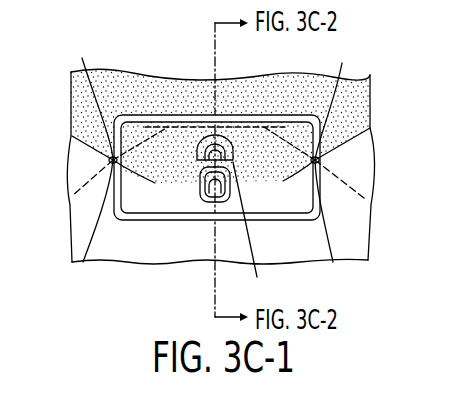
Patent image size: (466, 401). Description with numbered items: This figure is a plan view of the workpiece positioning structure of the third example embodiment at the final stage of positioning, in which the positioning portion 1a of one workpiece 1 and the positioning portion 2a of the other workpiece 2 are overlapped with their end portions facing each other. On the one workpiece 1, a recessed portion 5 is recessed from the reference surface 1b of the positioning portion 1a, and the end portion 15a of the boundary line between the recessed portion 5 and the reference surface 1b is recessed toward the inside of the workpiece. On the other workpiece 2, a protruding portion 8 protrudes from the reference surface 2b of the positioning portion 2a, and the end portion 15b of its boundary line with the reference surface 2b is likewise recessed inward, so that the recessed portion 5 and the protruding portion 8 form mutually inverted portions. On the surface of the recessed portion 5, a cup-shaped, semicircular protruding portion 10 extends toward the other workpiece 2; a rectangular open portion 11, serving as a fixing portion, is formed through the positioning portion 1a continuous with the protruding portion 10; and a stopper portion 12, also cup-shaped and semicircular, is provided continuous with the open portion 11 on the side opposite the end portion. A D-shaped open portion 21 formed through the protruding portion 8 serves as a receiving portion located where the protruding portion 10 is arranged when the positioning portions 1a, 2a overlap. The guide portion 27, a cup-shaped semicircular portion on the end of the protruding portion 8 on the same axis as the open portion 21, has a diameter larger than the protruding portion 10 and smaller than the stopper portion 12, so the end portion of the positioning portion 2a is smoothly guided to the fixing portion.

The workpiece 1 is at (66, 265).
The positioning portion 1a is at (78, 163).
The reference surface 1b is at (350, 244).
The workpiece 2 is at (354, 72).
The positioning portion 2a is at (83, 117).
The reference surface 2b is at (355, 108).
The recessed portion 5 is at (162, 198).
The protruding portion 8 is at (143, 132).
The protruding portion 10 is at (223, 133).
The open portion 11 is at (197, 182).
The stopper portion 12 is at (217, 201).
The end portion 15a is at (208, 230).
The end portion 15b is at (210, 97).
The open portion 21 is at (207, 131).
The guide portion 27 is at (257, 277).